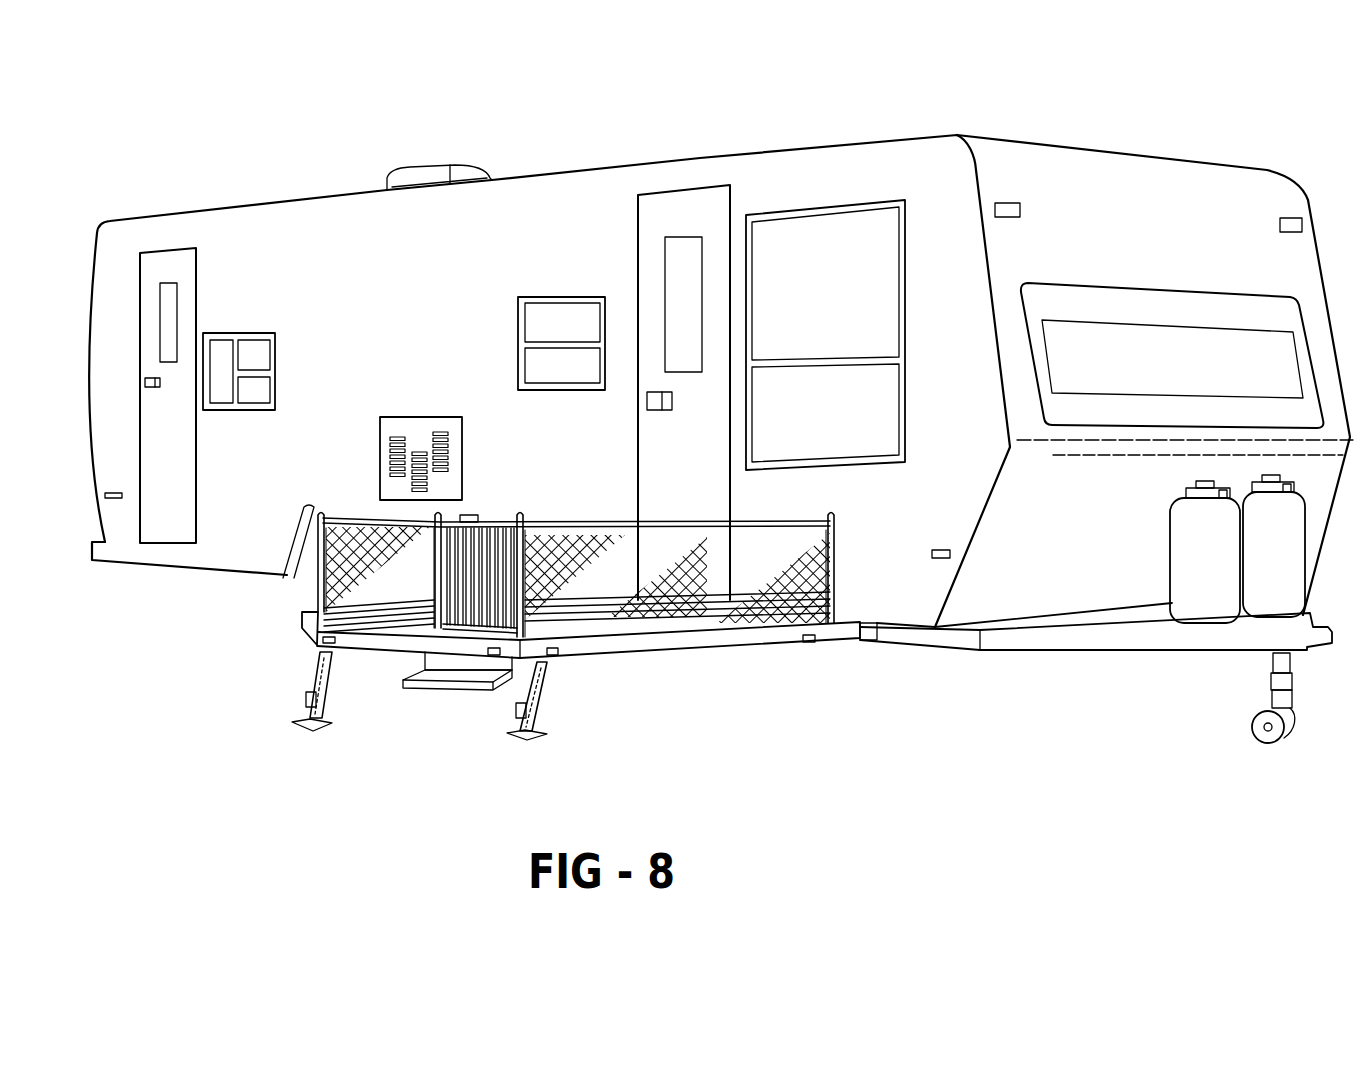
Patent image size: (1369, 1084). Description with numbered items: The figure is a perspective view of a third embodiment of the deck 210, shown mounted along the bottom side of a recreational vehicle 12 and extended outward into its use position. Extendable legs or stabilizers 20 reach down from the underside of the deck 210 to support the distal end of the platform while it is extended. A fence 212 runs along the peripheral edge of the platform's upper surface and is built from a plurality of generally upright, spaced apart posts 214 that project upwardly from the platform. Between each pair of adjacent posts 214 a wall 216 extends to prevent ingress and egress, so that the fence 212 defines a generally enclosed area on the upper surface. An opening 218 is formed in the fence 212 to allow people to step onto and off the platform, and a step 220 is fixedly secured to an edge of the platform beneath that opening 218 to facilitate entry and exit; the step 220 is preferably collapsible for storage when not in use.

The vehicle 12 is at (268, 223).
The stabilizer 20 is at (337, 700).
The deck 210 is at (280, 657).
The fence 212 is at (857, 563).
The posts 214 is at (318, 553).
The wall 216 is at (363, 545).
The opening 218 is at (499, 543).
The step 220 is at (449, 685).